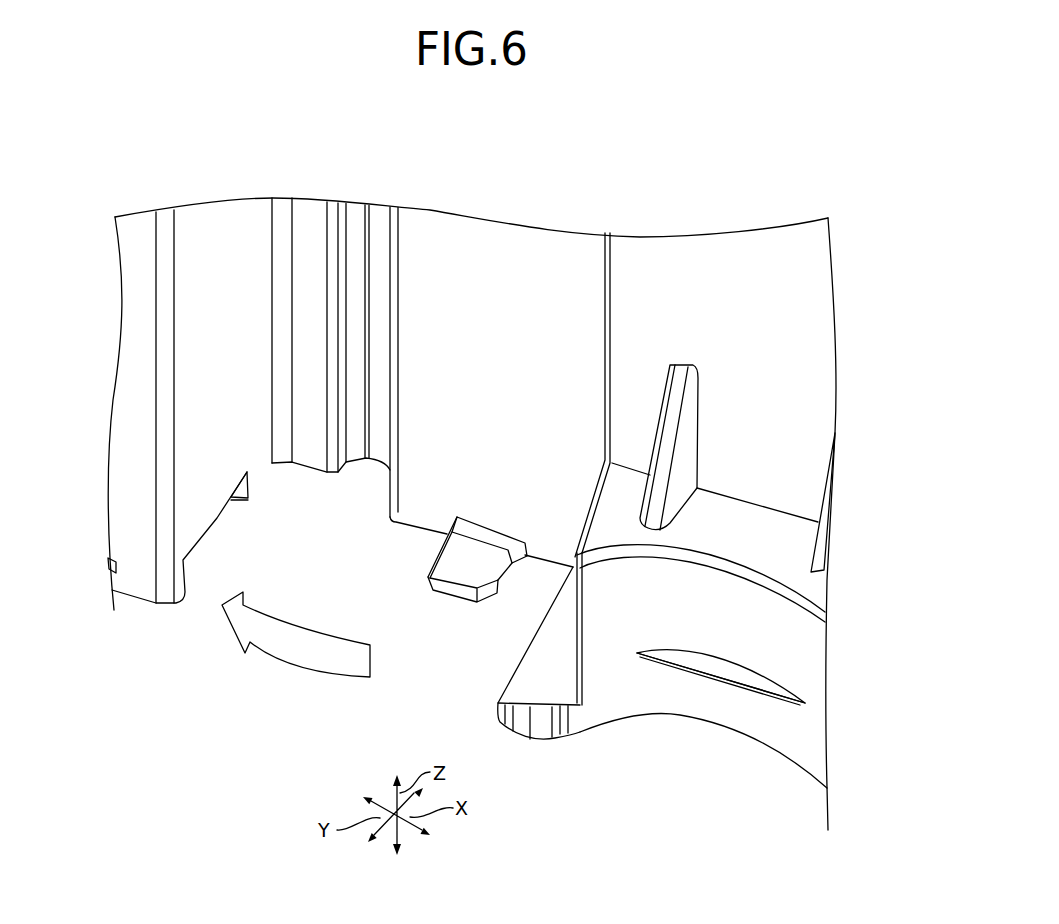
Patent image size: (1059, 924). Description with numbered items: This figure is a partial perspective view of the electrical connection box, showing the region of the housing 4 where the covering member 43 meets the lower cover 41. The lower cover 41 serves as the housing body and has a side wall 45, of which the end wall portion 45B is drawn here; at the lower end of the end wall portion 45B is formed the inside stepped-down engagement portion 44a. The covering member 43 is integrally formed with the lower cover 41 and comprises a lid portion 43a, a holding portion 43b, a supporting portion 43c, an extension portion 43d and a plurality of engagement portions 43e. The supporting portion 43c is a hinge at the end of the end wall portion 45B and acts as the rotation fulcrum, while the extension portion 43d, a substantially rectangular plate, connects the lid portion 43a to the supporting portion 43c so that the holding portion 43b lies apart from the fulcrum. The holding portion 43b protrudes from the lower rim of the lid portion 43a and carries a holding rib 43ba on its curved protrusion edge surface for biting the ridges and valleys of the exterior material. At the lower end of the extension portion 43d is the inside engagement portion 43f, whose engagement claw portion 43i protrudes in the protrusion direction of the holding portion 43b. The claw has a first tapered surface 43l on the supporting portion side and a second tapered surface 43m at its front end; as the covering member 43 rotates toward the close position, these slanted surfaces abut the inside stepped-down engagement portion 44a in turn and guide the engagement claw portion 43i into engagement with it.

The housing 4 is at (472, 465).
The lower cover 41 is at (254, 355).
The end wall portion 45B is at (236, 292).
The side wall 45 is at (281, 282).
The inside stepped-down engagement portion 44a is at (217, 518).
The covering member 43 is at (570, 487).
The lid portion 43a is at (773, 282).
The holding portion 43b is at (684, 724).
The holding rib 43ba is at (690, 657).
The supporting portion 43c is at (356, 490).
The extension portion 43d is at (497, 247).
The engagement portion 43e is at (422, 604).
The inside engagement portion 43f is at (429, 657).
The engagement claw portion 43i is at (508, 570).
The first tapered surface 43l is at (428, 560).
The second tapered surface 43m is at (460, 577).